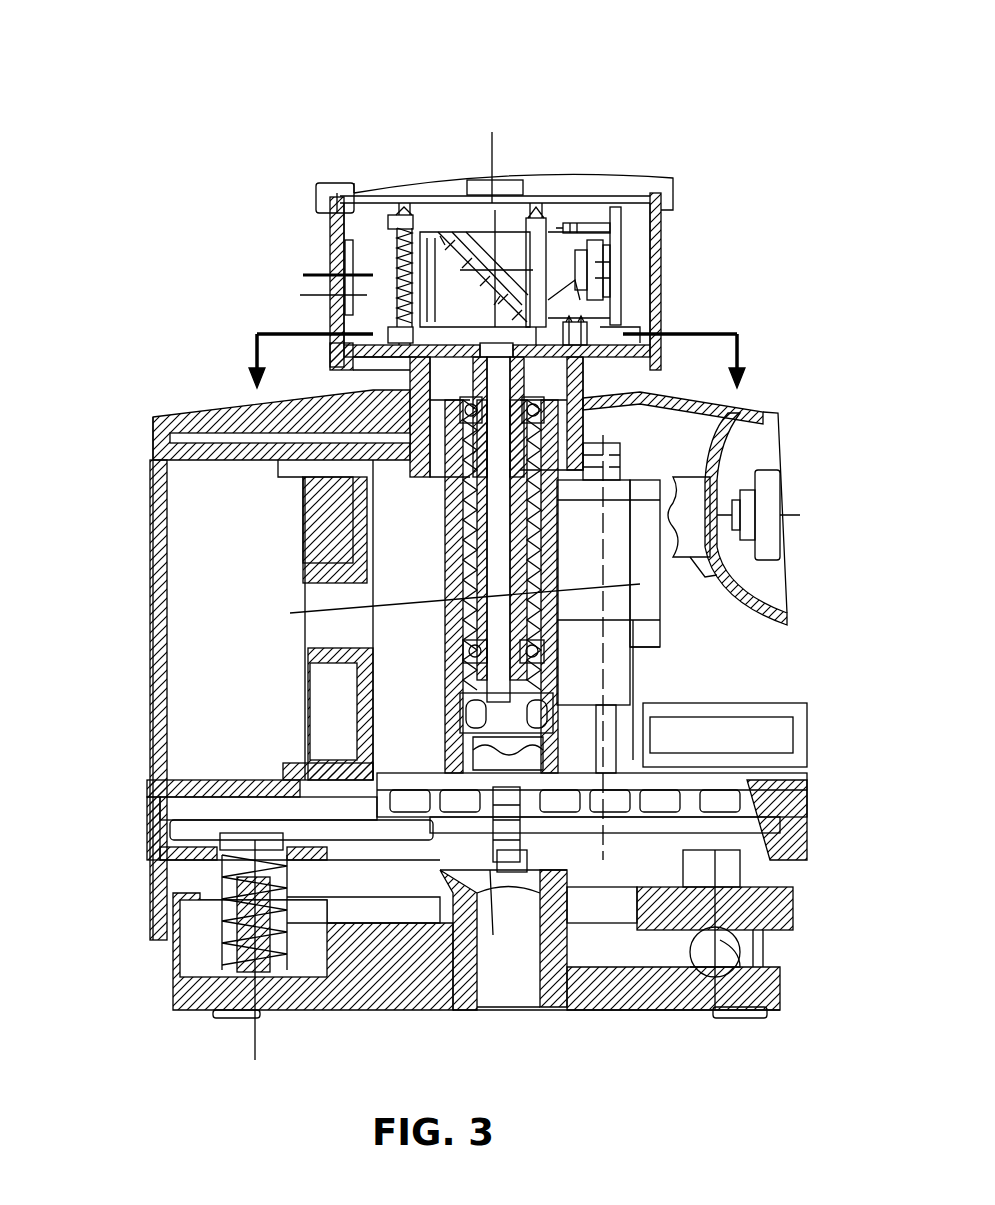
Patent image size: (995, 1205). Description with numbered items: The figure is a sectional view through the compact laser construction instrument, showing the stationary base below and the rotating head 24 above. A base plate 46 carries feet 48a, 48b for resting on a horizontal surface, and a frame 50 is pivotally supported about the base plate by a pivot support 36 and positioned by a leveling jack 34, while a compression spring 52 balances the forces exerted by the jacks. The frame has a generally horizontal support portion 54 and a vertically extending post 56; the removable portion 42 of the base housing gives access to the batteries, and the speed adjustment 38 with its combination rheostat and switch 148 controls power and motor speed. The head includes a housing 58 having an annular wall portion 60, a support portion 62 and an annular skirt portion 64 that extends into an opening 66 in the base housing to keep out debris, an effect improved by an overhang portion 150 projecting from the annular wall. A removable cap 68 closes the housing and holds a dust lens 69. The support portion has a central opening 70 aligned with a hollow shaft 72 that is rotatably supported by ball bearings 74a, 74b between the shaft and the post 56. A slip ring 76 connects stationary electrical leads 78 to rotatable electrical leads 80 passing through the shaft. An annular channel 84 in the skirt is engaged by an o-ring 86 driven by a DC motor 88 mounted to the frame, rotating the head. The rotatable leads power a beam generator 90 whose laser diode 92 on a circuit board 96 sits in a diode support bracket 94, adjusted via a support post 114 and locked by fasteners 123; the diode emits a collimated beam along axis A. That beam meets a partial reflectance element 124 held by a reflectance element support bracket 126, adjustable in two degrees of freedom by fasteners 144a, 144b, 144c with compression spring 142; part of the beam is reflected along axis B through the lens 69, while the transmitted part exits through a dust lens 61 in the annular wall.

The rotating head 24 is at (677, 173).
The leveling jack 34 is at (777, 933).
The pivot support 36 is at (493, 940).
The speed adjustment 38 is at (773, 470).
The removable portion 42 is at (152, 520).
The base plate 46 is at (618, 1010).
The foot 48a is at (747, 1017).
The foot 48b is at (228, 1018).
The frame 50 is at (417, 767).
The compression spring 52 is at (280, 947).
The horizontal support portion 54 is at (610, 790).
The post 56 is at (440, 593).
The housing 58 is at (333, 317).
The annular wall portion 60 is at (333, 227).
The dust lens 61 is at (333, 258).
The support portion 62 is at (353, 370).
The annular skirt portion 64 is at (747, 400).
The opening 66 is at (583, 396).
The removable cap 68 is at (490, 232).
The dust lens 69 is at (512, 180).
The central opening 70 is at (280, 470).
The hollow shaft 72 is at (560, 613).
The ball bearing 74a is at (307, 480).
The ball bearing 74b is at (440, 648).
The slip ring 76 is at (616, 715).
The stationary electrical leads 78 is at (623, 690).
The rotatable electrical leads 80 is at (333, 295).
The annular channel 84 is at (303, 570).
The o-ring 86 is at (590, 452).
The DC motor 88 is at (655, 630).
The beam generator 90 is at (620, 287).
The laser diode 92 is at (610, 253).
The diode support bracket 94 is at (583, 240).
The circuit board 96 is at (627, 223).
The support post 114 is at (431, 238).
The fasteners 123 is at (620, 333).
The partial reflectance element 124 is at (468, 232).
The reflectance element support bracket 126 is at (452, 232).
The compression spring 142 is at (330, 195).
The fastener 144a is at (620, 310).
The fastener 144b is at (548, 207).
The fastener 144c is at (402, 215).
The combination rheostat and switch 148 is at (707, 577).
The overhang portion 150 is at (247, 345).
The axis A is at (303, 275).
The axis B is at (488, 147).